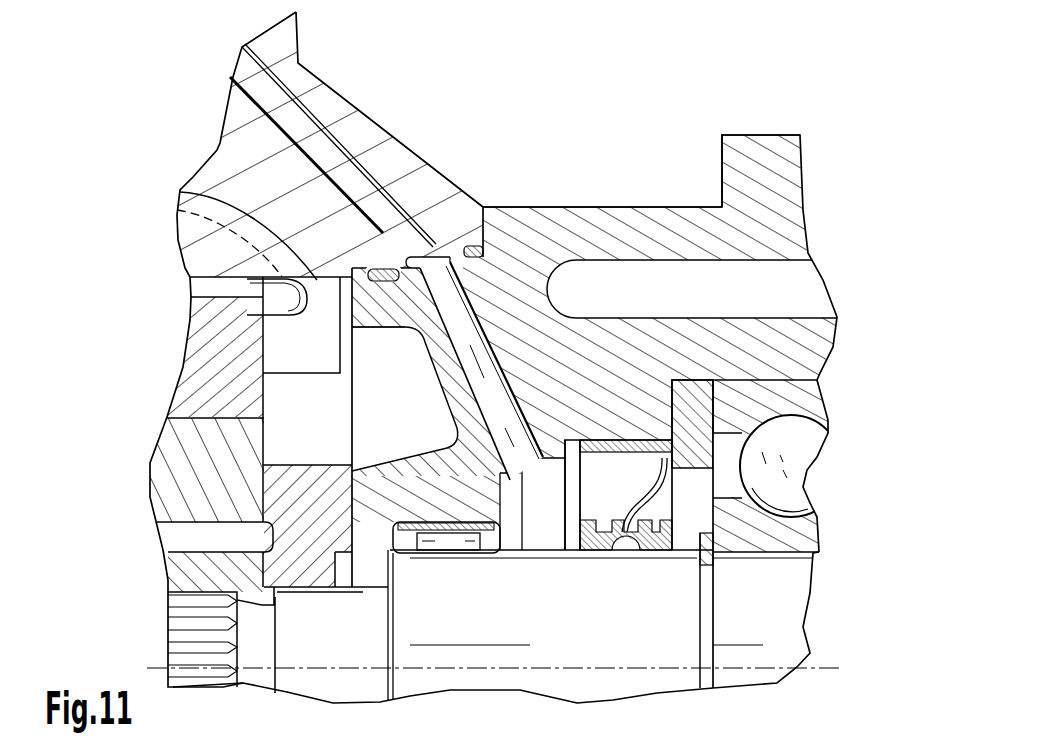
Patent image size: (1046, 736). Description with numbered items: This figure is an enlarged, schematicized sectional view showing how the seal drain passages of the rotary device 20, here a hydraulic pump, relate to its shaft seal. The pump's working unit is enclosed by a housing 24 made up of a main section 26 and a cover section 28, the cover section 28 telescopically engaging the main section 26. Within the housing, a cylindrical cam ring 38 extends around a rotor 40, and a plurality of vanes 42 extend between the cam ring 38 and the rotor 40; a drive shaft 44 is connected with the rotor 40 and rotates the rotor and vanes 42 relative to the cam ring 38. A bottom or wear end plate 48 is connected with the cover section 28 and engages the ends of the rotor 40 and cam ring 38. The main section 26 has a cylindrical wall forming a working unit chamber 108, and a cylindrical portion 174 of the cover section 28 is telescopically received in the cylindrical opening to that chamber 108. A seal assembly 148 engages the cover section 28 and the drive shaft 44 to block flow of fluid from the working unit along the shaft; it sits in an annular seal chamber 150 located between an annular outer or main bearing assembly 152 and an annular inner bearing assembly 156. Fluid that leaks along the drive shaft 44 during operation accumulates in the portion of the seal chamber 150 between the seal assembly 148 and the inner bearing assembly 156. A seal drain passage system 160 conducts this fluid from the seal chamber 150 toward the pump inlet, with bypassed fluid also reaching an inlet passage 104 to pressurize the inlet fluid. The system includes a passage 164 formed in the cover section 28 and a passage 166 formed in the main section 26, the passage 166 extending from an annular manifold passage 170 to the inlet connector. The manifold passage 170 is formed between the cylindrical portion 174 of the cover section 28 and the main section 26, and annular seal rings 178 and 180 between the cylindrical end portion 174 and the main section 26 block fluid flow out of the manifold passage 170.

The rotary device 20 is at (587, 79).
The housing 24 is at (408, 95).
The main section 26 is at (311, 32).
The cover section 28 is at (759, 124).
The cam ring 38 is at (227, 377).
The rotor 40 is at (185, 572).
The vanes 42 is at (190, 478).
The drive shaft 44 is at (767, 600).
The bottom or wear end plate 48 is at (337, 480).
The inlet passage 104 is at (273, 305).
The working unit chamber 108 is at (180, 195).
The seal assembly 148 is at (614, 425).
The seal chamber 150 is at (540, 540).
The outer or main bearing assembly 152 is at (803, 458).
The inner bearing assembly 156 is at (450, 543).
The seal drain passage system 160 is at (433, 232).
The passage 164 is at (473, 360).
The passage 166 is at (312, 137).
The annular manifold passage 170 is at (415, 323).
The cylindrical portion 174 is at (367, 303).
The annular seal ring 178 is at (395, 262).
The annular seal ring 180 is at (484, 245).